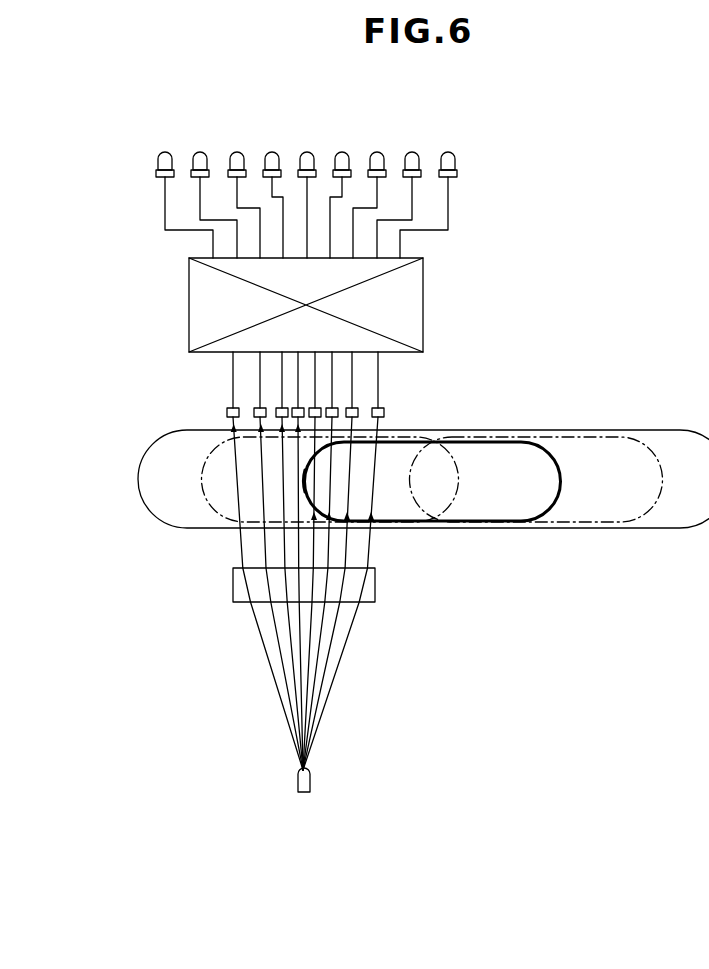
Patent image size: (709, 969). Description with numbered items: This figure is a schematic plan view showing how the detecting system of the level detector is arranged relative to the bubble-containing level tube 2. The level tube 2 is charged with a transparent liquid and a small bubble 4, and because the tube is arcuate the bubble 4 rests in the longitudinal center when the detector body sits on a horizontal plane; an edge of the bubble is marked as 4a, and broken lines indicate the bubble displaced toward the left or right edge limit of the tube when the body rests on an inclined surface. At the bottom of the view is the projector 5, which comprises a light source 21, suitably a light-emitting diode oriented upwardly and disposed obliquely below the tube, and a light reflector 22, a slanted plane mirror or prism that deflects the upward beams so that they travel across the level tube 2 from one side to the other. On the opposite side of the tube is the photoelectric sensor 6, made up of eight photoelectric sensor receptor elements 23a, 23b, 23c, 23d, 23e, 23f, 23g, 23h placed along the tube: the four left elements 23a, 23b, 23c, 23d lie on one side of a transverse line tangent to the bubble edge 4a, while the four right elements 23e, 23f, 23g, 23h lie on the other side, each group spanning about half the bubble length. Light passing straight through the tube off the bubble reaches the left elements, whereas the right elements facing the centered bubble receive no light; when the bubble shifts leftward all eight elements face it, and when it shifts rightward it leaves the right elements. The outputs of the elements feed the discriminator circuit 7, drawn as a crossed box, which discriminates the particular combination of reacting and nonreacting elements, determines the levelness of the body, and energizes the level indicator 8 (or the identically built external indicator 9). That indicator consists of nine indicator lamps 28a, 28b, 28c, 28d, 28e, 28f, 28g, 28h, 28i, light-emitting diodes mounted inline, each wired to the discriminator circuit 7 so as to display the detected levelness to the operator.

The bubble-containing level tube 2 is at (658, 530).
The bubble 4 is at (517, 495).
The leading edge of object 4a is at (307, 485).
The projector 5 is at (301, 788).
The photoelectric sensor 6 is at (300, 486).
The discriminator circuit 7 is at (397, 308).
The internal level indicator 8 is at (323, 164).
The external level indicator 9 is at (277, 164).
The light source 21 is at (312, 780).
The light reflector 22 is at (367, 595).
The photoelectric sensor receptor element 23a is at (227, 411).
The photoelectric sensor receptor element 23b is at (259, 408).
The photoelectric sensor receptor element 23c is at (280, 416).
The photoelectric sensor receptor element 23d is at (296, 417).
The photoelectric sensor receptor element 23e is at (315, 408).
The photoelectric sensor receptor element 23f is at (333, 408).
The photoelectric sensor receptor element 23g is at (353, 417).
The photoelectric sensor receptor element 23h is at (379, 417).
The indicator lamp 28a is at (162, 160).
The indicator lamp 28b is at (197, 158).
The indicator lamp 28c is at (230, 160).
The indicator lamp 28d is at (272, 157).
The indicator lamp 28e is at (307, 155).
The indicator lamp 28f is at (342, 155).
The indicator lamp 28g is at (377, 155).
The indicator lamp 28h is at (412, 155).
The indicator lamp 28i is at (448, 155).